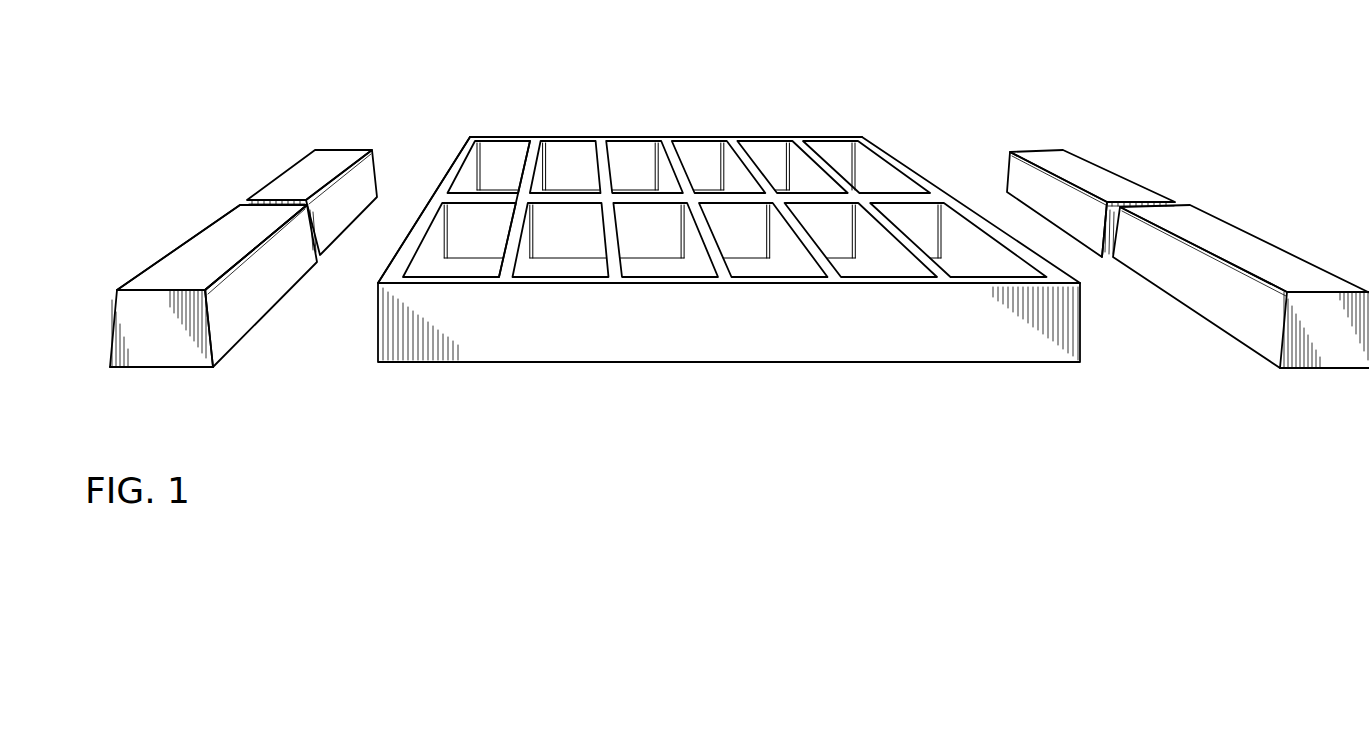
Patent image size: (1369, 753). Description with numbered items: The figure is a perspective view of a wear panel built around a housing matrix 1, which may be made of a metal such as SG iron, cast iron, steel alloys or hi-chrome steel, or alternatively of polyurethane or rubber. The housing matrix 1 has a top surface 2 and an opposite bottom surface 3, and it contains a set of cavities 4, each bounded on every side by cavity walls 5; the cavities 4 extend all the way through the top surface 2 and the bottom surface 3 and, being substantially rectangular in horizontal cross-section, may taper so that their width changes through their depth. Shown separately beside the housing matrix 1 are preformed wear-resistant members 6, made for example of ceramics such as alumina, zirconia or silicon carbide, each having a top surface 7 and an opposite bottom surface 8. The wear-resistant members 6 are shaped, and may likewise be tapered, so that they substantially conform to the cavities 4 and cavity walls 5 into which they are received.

The housing matrix 1 is at (832, 89).
The top surface 2 is at (780, 362).
The bottom surface 3 is at (693, 138).
The cavity 4 is at (475, 262).
The cavity wall 5 is at (483, 242).
The wear-resistant member 6 is at (278, 160).
The top surface 7 is at (172, 270).
The bottom surface 8 is at (145, 368).